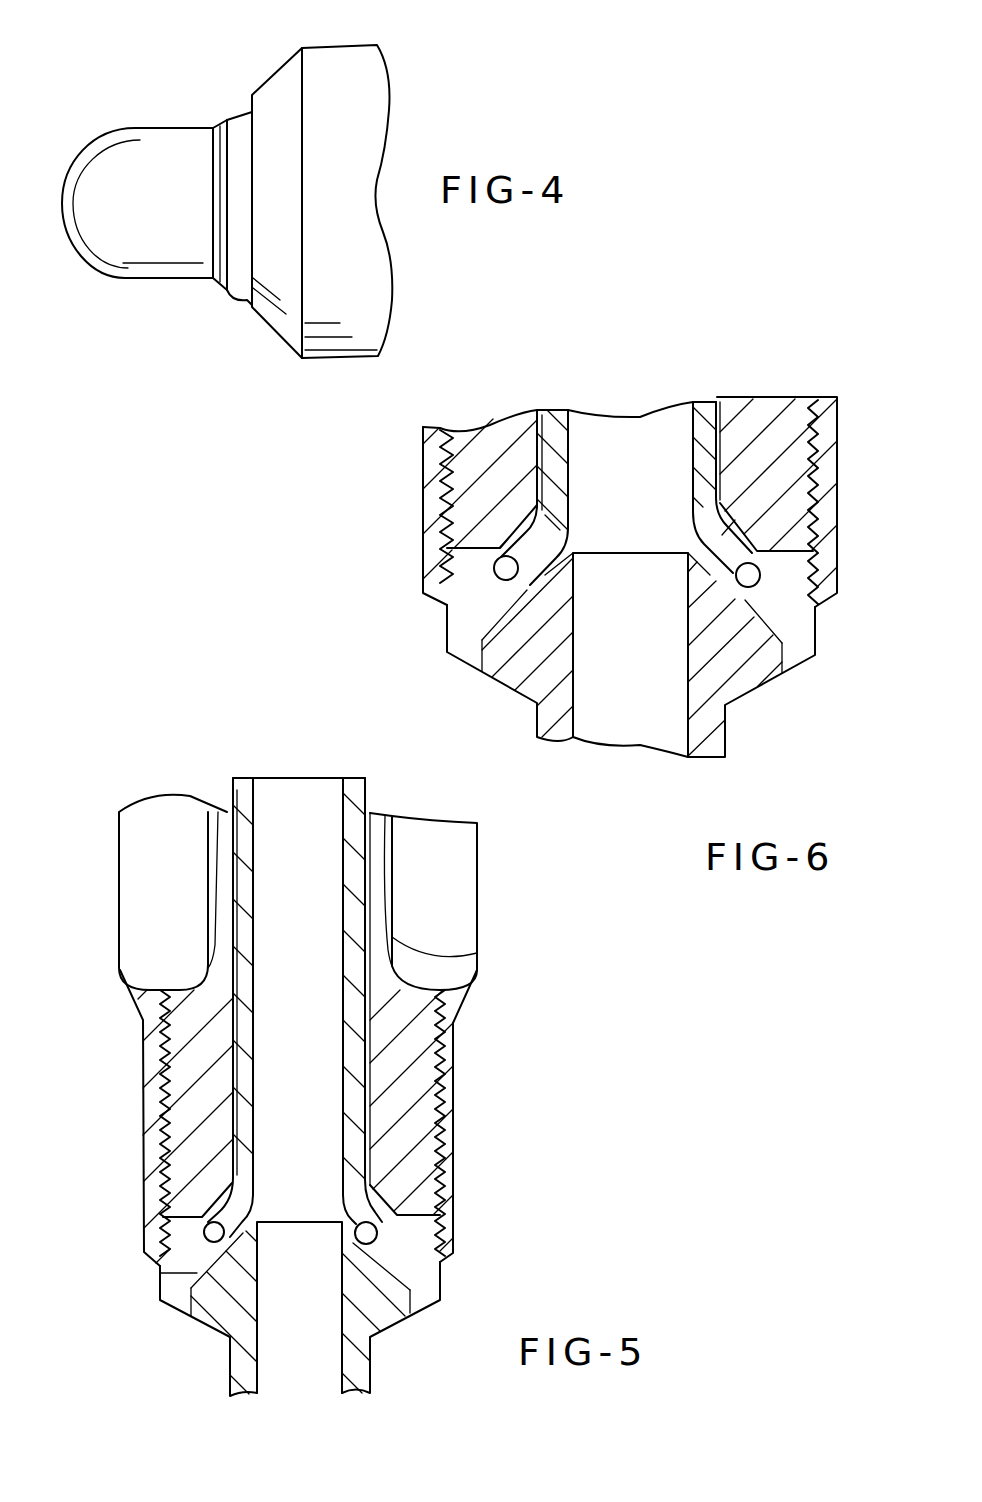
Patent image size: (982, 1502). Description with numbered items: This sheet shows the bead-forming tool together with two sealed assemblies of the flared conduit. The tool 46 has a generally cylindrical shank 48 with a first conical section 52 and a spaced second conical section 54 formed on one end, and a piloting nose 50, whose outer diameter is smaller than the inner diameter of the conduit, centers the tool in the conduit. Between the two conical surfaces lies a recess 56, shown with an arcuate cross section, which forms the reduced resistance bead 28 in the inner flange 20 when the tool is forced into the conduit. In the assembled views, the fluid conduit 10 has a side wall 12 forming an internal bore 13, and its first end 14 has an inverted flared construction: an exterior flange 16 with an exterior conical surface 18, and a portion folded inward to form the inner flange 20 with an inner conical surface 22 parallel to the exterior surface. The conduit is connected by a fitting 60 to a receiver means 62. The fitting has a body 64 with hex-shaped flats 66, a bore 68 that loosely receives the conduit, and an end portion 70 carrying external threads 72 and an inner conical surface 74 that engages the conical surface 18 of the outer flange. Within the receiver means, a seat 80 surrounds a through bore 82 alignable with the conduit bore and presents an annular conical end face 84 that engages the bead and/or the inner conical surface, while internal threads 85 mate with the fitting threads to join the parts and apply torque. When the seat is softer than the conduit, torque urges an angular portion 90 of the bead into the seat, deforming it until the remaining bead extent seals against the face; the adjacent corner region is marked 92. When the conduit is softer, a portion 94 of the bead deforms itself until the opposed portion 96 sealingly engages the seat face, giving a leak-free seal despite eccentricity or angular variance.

In FIG. 6, the fluid conduit 10 is at (668, 434).
In FIG. 5, the fluid conduit 10 is at (243, 775).
In FIG. 6, the side wall 12 is at (553, 420).
In FIG. 5, the side wall 12 is at (230, 800).
In FIG. 5, the internal bore 13 is at (340, 799).
In FIG. 5, the first end 14 is at (198, 1227).
In FIG. 6, the exterior flange 16 is at (750, 562).
In FIG. 5, the exterior flange 16 is at (430, 1227).
In FIG. 6, the exterior conical-shaped surface 18 is at (722, 540).
In FIG. 5, the exterior conical-shaped surface 18 is at (400, 1208).
In FIG. 6, the inner flange 20 is at (747, 570).
In FIG. 5, the inner flange 20 is at (352, 1222).
In FIG. 6, the inner conical surface 22 is at (782, 610).
In FIG. 5, the inner conical surface 22 is at (405, 1258).
In FIG. 6, the reduced resistance bead 28 is at (724, 600).
In FIG. 5, the reduced resistance bead 28 is at (355, 1264).
In FIG. 4, the tool 46 is at (248, 50).
In FIG. 4, the shank 48 is at (325, 343).
In FIG. 4, the piloting nose 50 is at (135, 140).
In FIG. 4, the first conical section 52 is at (222, 128).
In FIG. 4, the second conical section 54 is at (270, 327).
In FIG. 4, the recess 56 is at (247, 293).
In FIG. 6, the fitting 60 is at (420, 540).
In FIG. 5, the fitting 60 is at (101, 885).
In FIG. 6, the receiver means 62 is at (727, 732).
In FIG. 5, the receiver means 62 is at (208, 1357).
In FIG. 5, the body 64 is at (133, 820).
In FIG. 5, the hex-shaped flats 66 is at (477, 953).
In FIG. 5, the bore 68 is at (352, 857).
In FIG. 5, the end portion 70 is at (170, 1000).
In FIG. 5, the external threads 72 is at (170, 1017).
In FIG. 6, the inner conical surface 74 is at (560, 530).
In FIG. 5, the inner conical surface 74 is at (225, 1208).
In FIG. 6, the seat 80 is at (515, 663).
In FIG. 5, the seat 80 is at (200, 1307).
In FIG. 5, the through bore 82 is at (322, 1358).
In FIG. 6, the annular conical end face 84 is at (493, 628).
In FIG. 5, the annular conical end face 84 is at (197, 1273).
In FIG. 5, the threads 85 is at (165, 1062).
In FIG. 5, the angular portion of the reduced resistance bead 90 is at (343, 1257).
In FIG. 5, the seat corner 92 is at (258, 1262).
In FIG. 6, the deforming portion of the reduced resistance bead 94 is at (690, 577).
In FIG. 6, the opposed portion of the bead 96 is at (553, 577).